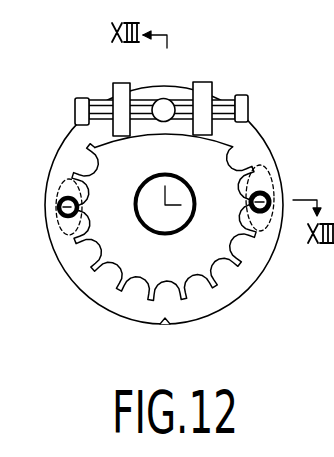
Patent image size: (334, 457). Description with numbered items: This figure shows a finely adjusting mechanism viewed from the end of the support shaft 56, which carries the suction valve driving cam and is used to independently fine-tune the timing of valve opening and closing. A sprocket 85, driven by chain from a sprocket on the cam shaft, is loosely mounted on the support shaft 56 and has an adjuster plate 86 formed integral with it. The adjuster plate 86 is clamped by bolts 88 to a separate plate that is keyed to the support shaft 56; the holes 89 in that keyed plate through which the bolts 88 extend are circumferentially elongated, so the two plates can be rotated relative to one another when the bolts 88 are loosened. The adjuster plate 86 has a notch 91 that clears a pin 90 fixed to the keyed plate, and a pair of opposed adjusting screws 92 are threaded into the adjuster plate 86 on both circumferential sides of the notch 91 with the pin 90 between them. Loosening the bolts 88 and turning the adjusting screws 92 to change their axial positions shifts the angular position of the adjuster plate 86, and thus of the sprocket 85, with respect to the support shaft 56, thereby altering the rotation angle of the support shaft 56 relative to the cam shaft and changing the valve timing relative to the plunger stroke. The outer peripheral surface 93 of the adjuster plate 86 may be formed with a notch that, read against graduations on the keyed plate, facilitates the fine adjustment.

The support shaft 56 is at (146, 221).
The sprocket 85 is at (218, 262).
The adjuster plate 86 is at (68, 148).
The bolts 88 is at (62, 198).
The holes 89 is at (271, 163).
The pin 90 is at (167, 99).
The notch 91 is at (153, 96).
The adjusting screws 92 is at (86, 98).
The outer peripheral surface 93 is at (160, 327).